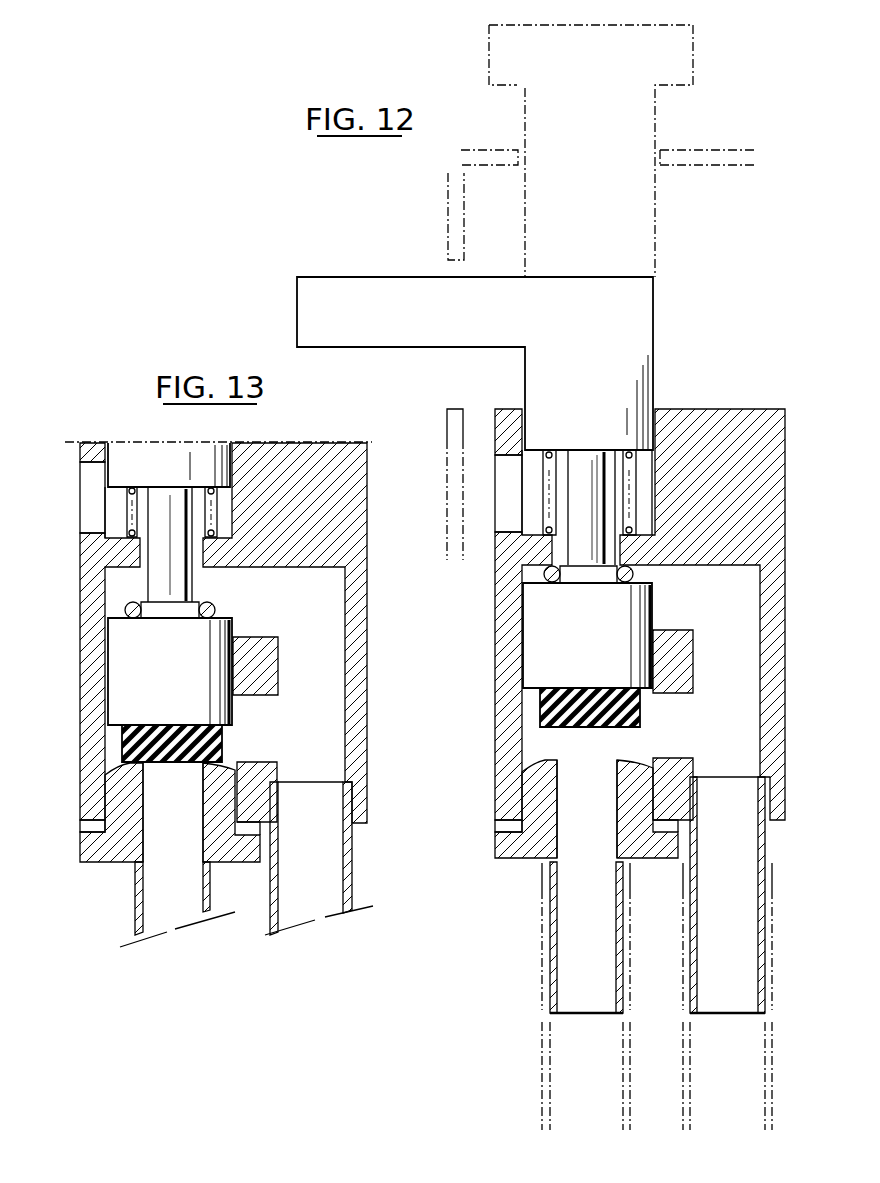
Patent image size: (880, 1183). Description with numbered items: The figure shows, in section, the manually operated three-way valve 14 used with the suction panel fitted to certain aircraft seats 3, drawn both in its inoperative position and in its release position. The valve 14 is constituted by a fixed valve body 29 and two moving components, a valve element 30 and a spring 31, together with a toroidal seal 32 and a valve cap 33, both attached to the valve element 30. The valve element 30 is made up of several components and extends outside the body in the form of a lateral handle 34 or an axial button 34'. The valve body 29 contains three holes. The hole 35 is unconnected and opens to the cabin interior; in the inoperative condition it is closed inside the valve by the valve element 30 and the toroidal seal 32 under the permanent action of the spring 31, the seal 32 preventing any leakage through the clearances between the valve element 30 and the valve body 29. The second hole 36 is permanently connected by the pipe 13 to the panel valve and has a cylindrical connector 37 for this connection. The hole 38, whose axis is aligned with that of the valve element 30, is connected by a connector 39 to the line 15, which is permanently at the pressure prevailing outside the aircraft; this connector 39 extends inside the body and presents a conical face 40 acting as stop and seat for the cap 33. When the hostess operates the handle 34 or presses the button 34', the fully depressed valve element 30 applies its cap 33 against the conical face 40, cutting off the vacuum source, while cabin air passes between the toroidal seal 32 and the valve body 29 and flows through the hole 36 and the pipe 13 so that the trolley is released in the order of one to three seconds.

In FIG. 12, the seat 3 is at (472, 153).
In FIG. 12, the pipe 13 is at (690, 1080).
In FIG. 12, the three-way valve 14 is at (492, 632).
In FIG. 13, the three-way valve 14 is at (79, 612).
In FIG. 12, the line 15 is at (548, 1080).
In FIG. 12, the valve body 29 is at (510, 764).
In FIG. 13, the valve body 29 is at (93, 782).
In FIG. 12, the valve element 30 is at (572, 648).
In FIG. 13, the valve element 30 is at (150, 685).
In FIG. 12, the spring 31 is at (545, 507).
In FIG. 12, the toroidal seal 32 is at (548, 575).
In FIG. 13, the toroidal seal 32 is at (210, 612).
In FIG. 12, the valve cap 33 is at (548, 708).
In FIG. 13, the valve cap 33 is at (130, 745).
In FIG. 12, the lateral handle 34 is at (475, 332).
In FIG. 12, the axial button 34' is at (555, 148).
In FIG. 12, the hole 35 is at (508, 484).
In FIG. 13, the hole 35 is at (98, 490).
In FIG. 12, the second hole 36 is at (738, 846).
In FIG. 13, the second hole 36 is at (323, 854).
In FIG. 12, the cylindrical connector 37 is at (766, 924).
In FIG. 13, the cylindrical connector 37 is at (350, 890).
In FIG. 12, the hole 38 is at (597, 818).
In FIG. 13, the hole 38 is at (181, 818).
In FIG. 12, the connector 39 is at (548, 911).
In FIG. 13, the connector 39 is at (134, 890).
In FIG. 13, the conical face 40 is at (226, 768).